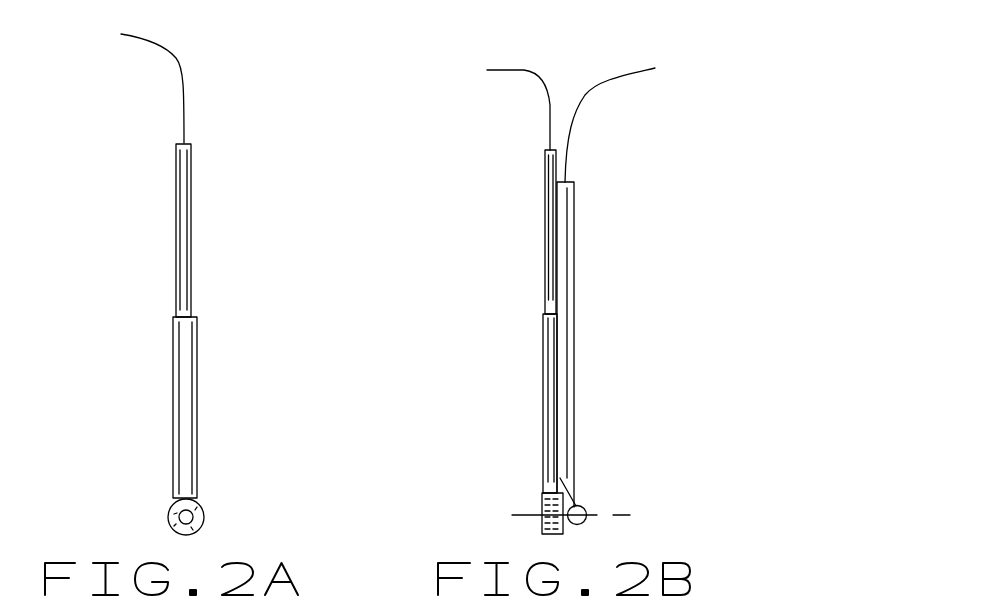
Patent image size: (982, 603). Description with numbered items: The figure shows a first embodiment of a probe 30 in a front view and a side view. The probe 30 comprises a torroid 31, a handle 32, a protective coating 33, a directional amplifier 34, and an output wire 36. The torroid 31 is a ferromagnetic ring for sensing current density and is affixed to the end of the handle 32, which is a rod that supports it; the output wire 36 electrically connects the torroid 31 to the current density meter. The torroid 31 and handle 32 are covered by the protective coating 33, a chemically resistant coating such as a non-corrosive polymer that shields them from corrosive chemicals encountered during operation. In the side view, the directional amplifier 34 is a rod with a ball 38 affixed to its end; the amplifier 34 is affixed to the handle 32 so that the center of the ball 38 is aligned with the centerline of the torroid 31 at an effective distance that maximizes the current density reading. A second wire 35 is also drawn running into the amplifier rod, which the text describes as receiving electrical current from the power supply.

In FIG. 2A, the probe 30 is at (116, 80).
In FIG. 2B, the probe 30 is at (593, 171).
In FIG. 2A, the torroid 31 is at (198, 510).
In FIG. 2A, the handle 32 is at (185, 232).
In FIG. 2B, the handle 32 is at (553, 209).
In FIG. 2A, the protective coating 33 is at (188, 364).
In FIG. 2B, the protective coating 33 is at (542, 371).
In FIG. 2B, the directional amplifier 34 is at (567, 423).
In FIG. 2B, the second lead wire 35 is at (624, 72).
In FIG. 2A, the output wire 36 is at (155, 45).
In FIG. 2B, the output wire 36 is at (523, 68).
In FIG. 2B, the ball 38 is at (586, 506).